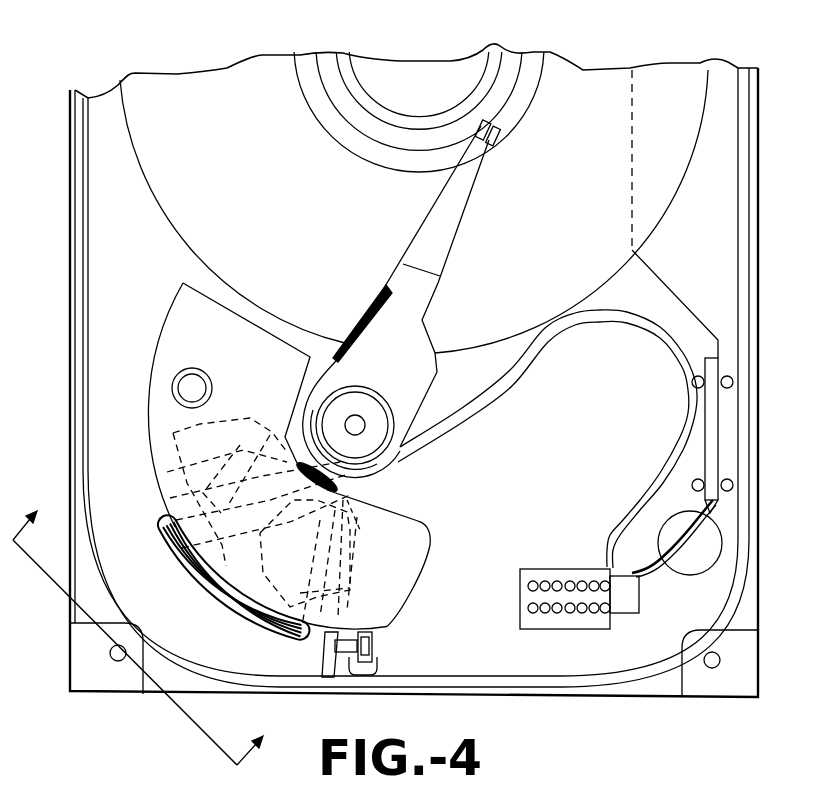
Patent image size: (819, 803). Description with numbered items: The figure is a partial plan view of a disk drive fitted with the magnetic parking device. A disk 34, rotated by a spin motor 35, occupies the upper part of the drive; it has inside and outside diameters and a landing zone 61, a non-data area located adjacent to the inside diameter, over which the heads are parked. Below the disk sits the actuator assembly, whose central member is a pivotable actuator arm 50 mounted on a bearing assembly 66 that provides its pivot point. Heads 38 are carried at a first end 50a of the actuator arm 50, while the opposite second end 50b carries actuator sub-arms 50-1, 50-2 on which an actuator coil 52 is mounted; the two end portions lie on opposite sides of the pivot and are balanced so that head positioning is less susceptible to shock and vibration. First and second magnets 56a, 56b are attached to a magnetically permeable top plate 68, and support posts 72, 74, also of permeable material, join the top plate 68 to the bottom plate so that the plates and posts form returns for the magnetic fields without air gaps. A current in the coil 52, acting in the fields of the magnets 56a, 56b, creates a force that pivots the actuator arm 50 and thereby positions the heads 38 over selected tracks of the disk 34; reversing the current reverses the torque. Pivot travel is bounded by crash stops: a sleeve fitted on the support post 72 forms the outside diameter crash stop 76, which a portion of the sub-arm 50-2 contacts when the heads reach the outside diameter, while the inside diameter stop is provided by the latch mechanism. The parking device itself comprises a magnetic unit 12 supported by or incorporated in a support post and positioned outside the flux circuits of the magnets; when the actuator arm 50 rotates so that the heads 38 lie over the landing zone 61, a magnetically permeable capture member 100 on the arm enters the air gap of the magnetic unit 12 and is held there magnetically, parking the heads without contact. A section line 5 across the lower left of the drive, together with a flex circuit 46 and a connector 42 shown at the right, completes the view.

The section line 5- 5 is at (146, 632).
The magnetic unit 12 is at (390, 645).
The disk 34 is at (581, 90).
The spin motor 35 is at (413, 72).
The heads 38 is at (502, 136).
The connector 42 is at (522, 570).
The flex circuit 46 is at (633, 328).
The actuator arm 50 is at (428, 380).
The first end of actuator arm 50a is at (417, 293).
The second end of actuator arm 50b is at (170, 473).
The actuator sub-arm 50-1 is at (352, 514).
The actuator sub-arm 50-2 is at (277, 427).
The actuator coil 52 is at (200, 598).
The first magnet 56a is at (190, 445).
The second magnet 56b is at (228, 614).
The landing zone 61 is at (515, 97).
The bearing assembly 66 is at (366, 447).
The top plate 68 is at (168, 364).
The support post 72 is at (195, 391).
The support post 74 is at (380, 653).
The outside diameter crash stop 76 is at (198, 368).
The capture member 100 is at (327, 648).